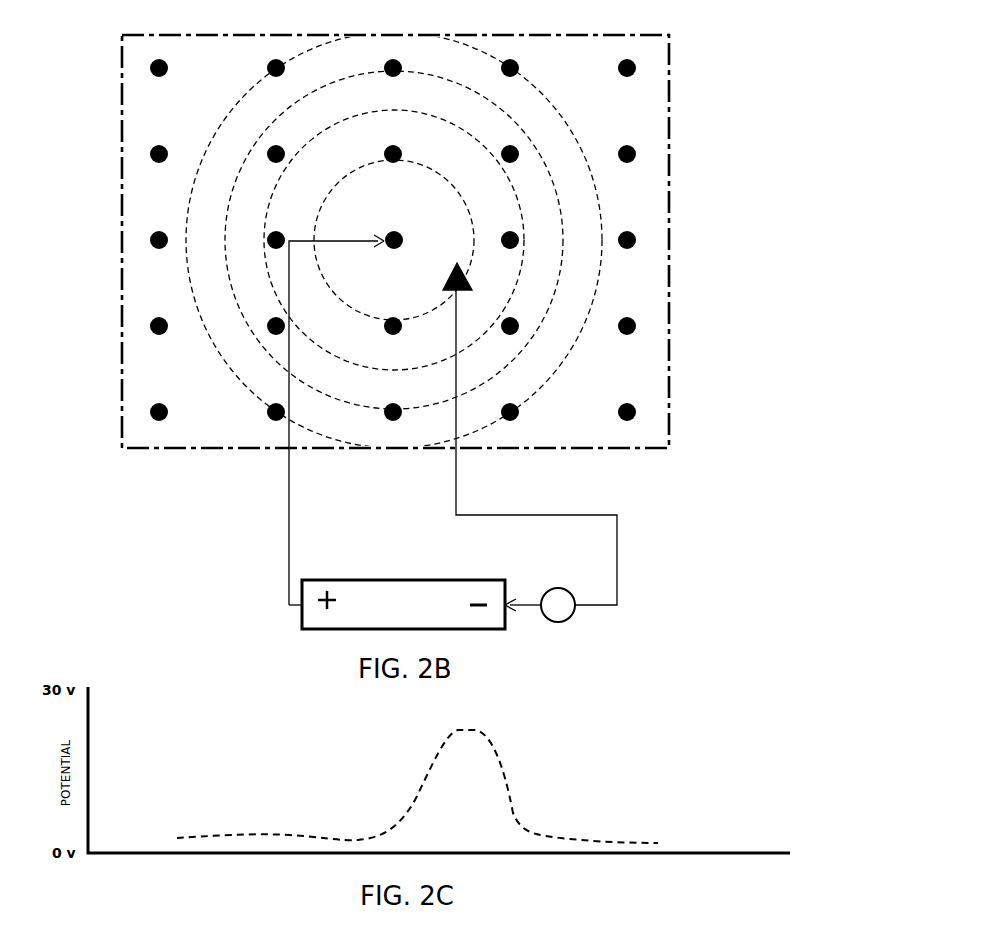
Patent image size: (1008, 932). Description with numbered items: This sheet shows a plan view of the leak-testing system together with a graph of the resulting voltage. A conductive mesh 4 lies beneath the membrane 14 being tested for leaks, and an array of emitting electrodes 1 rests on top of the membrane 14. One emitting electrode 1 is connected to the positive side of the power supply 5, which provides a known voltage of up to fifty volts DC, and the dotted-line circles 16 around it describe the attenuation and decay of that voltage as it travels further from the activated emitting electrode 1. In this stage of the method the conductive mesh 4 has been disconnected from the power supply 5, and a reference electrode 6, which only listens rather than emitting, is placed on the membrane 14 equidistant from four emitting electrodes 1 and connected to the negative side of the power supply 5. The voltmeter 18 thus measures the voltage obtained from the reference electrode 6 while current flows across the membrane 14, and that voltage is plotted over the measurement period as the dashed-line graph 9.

In FIG. 2B, the emitting electrode 1 is at (402, 238).
In FIG. 2B, the conductive mesh 4 is at (150, 452).
In FIG. 2B, the power supply 5 is at (420, 583).
In FIG. 2B, the reference electrode 6 is at (470, 275).
In FIG. 2C, the dashed-line graph 9 is at (503, 778).
In FIG. 2B, the membrane 14 is at (603, 115).
In FIG. 2B, the dotted-line circles 16 is at (602, 263).
In FIG. 2B, the voltmeter 18 is at (580, 612).